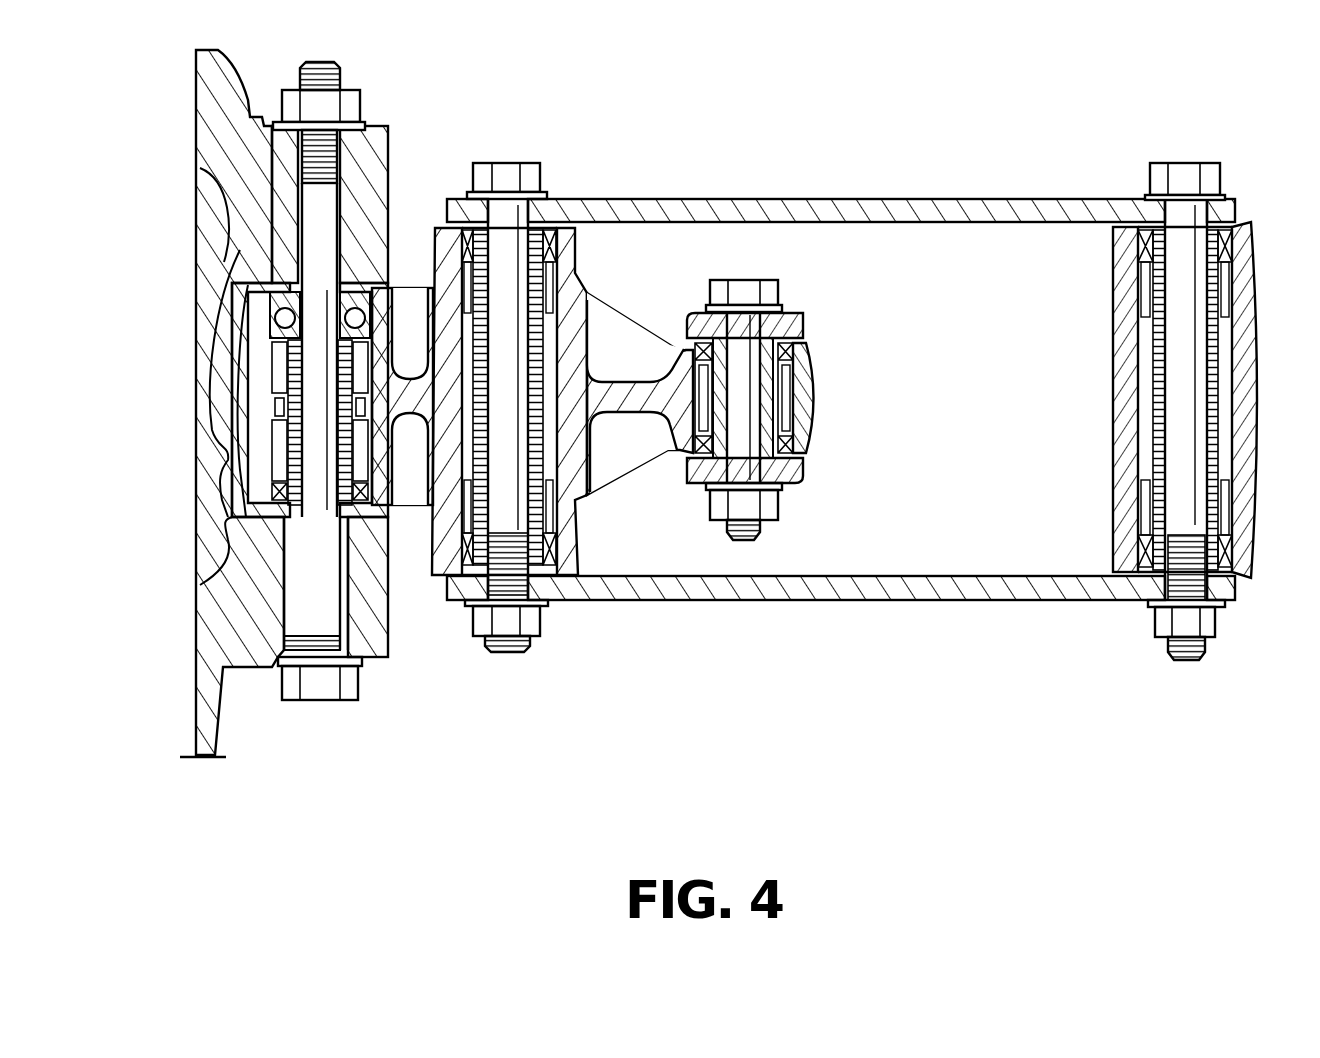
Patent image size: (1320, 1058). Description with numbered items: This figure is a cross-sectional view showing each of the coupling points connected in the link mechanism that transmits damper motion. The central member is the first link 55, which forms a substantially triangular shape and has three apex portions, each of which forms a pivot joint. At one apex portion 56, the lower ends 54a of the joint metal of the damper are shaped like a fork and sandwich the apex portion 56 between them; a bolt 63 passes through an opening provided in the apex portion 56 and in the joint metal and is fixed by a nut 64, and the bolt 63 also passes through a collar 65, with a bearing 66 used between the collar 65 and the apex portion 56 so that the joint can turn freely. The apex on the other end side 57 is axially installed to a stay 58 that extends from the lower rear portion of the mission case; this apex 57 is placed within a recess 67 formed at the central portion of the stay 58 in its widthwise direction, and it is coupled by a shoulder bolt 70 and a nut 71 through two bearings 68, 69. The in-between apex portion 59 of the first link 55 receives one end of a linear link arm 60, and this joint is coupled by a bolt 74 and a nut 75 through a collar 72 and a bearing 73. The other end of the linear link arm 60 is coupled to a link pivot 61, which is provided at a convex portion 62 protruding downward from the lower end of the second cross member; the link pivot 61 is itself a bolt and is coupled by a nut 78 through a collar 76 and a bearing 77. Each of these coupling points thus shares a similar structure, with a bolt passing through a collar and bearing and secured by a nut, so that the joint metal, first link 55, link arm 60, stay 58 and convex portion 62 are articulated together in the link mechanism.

The lower end of the joint metal 54a is at (797, 325).
The first link 55 is at (633, 455).
The apex portion 56 is at (815, 402).
The apex on the other end side 57 is at (247, 395).
The stay 58 is at (382, 172).
The in-between apex portion 59 is at (437, 530).
The linear link arm 60 is at (907, 200).
The link pivot 61 is at (1185, 170).
The convex portion 62 is at (1120, 372).
The bolt 63 is at (752, 284).
The nut 64 is at (772, 505).
The collar 65 is at (808, 372).
The bearing 66 is at (792, 420).
The recess 67 is at (222, 453).
The bearing 68 is at (196, 272).
The bearing 69 is at (275, 343).
The shoulder bolt 70 is at (325, 693).
The nut 71 is at (348, 100).
The collar 72 is at (587, 310).
The bearing 73 is at (562, 260).
The bolt 74 is at (510, 163).
The nut 75 is at (530, 620).
The collar 76 is at (1152, 443).
The bearing 77 is at (1140, 298).
The nut 78 is at (1158, 620).